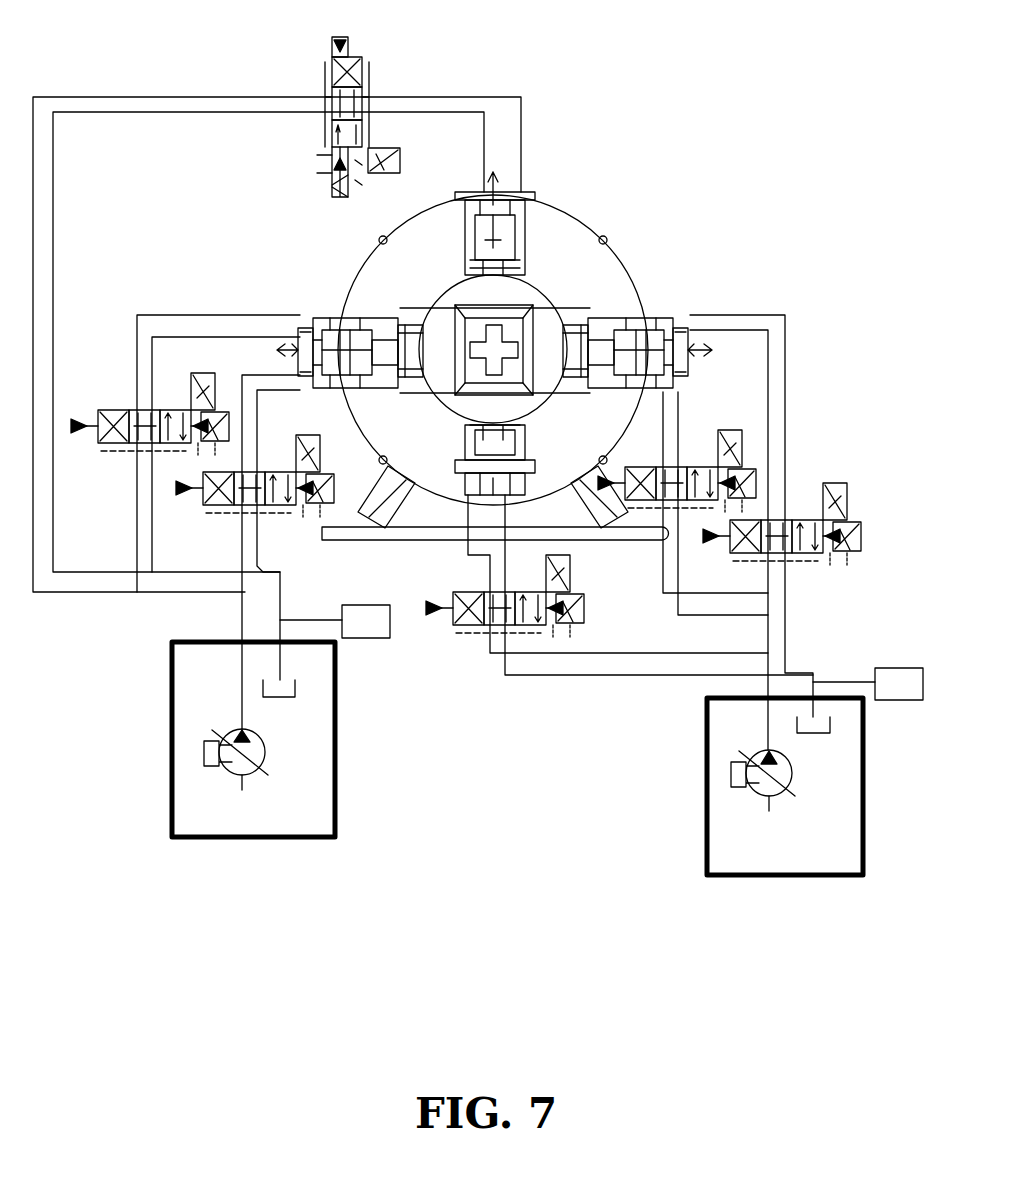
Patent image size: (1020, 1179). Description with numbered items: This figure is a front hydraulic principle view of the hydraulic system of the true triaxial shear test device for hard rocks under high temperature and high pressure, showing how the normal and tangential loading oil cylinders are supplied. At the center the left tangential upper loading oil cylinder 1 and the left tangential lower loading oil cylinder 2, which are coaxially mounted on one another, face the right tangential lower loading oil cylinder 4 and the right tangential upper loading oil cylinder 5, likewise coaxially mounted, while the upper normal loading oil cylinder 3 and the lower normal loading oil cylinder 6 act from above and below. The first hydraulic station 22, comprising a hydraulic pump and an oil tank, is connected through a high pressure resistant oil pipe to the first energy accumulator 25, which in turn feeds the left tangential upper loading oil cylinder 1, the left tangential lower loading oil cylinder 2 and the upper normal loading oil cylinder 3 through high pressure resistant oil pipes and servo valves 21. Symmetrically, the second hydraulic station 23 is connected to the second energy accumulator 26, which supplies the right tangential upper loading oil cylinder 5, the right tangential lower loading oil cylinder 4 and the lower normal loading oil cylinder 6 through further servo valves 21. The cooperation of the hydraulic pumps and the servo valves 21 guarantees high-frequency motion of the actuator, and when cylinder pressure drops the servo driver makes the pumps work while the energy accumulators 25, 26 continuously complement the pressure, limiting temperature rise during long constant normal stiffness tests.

The left tangential upper loading oil cylinder 1 is at (310, 330).
The left tangential lower loading oil cylinder 2 is at (335, 305).
The upper normal loading oil cylinder 3 is at (537, 195).
The right tangential lower loading oil cylinder 4 is at (652, 332).
The right tangential upper loading oil cylinder 5 is at (642, 292).
The lower normal loading oil cylinder 6 is at (465, 470).
The servo valves 21 is at (332, 85).
The first hydraulic station 22 is at (180, 748).
The second hydraulic station 23 is at (715, 770).
The first energy accumulator 25 is at (368, 645).
The second energy accumulator 26 is at (900, 708).